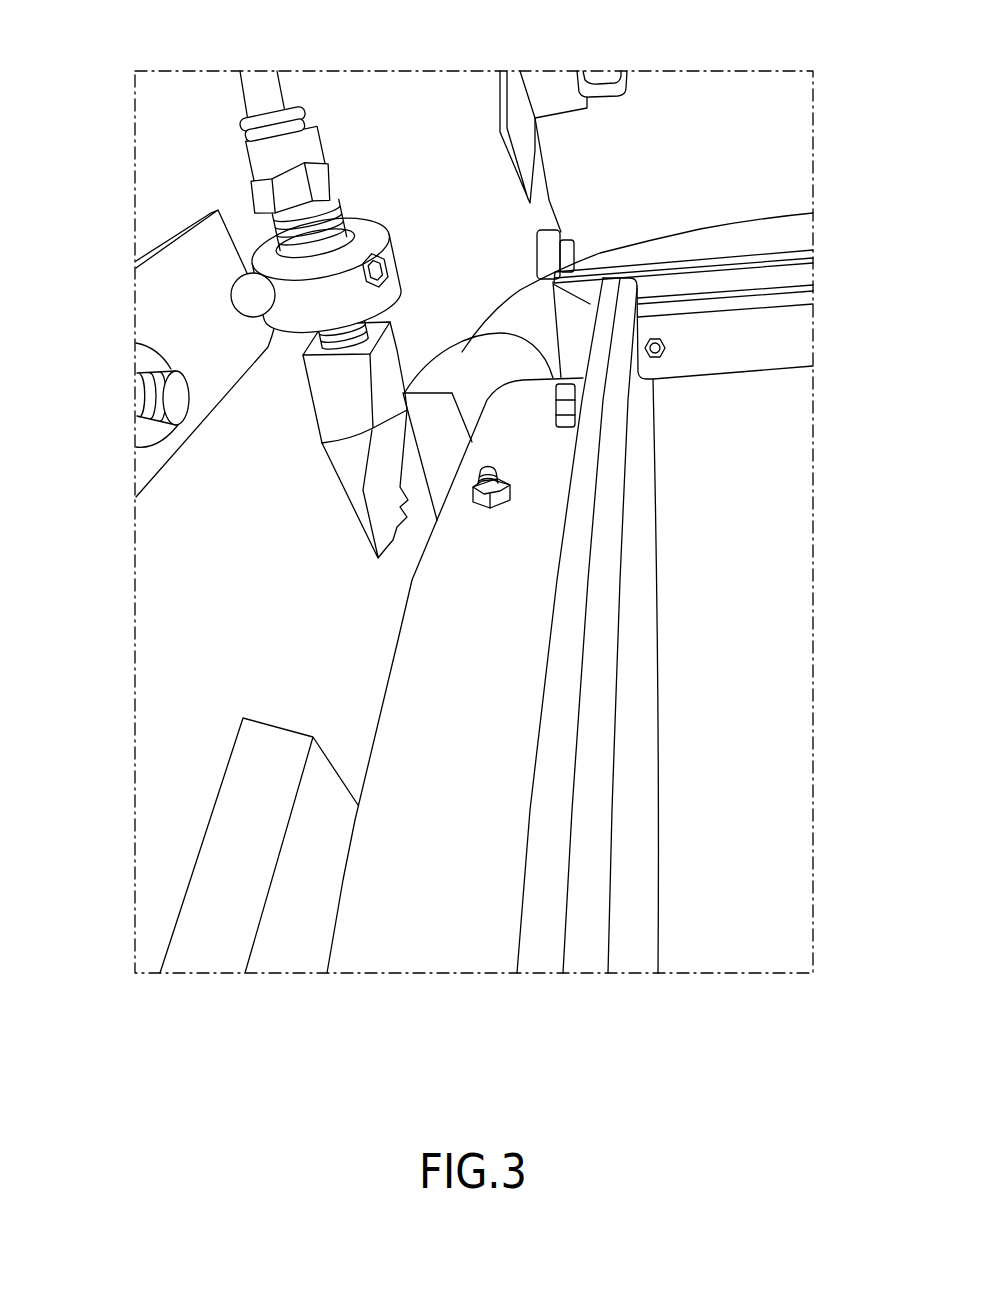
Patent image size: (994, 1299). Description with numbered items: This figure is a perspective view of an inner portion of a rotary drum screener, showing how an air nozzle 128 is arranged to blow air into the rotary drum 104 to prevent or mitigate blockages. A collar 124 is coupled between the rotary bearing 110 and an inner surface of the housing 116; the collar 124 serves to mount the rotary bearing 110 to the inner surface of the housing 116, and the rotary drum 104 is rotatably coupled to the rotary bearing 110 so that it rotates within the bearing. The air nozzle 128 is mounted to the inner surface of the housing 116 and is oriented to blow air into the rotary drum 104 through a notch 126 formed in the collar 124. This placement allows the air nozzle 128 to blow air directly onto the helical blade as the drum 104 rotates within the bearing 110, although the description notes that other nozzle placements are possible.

The rotary drum 104 is at (776, 432).
The rotary bearing 110 is at (508, 636).
The housing 116 is at (548, 183).
The collar 124 is at (813, 213).
The notch 126 is at (357, 656).
The air nozzle 128 is at (392, 352).